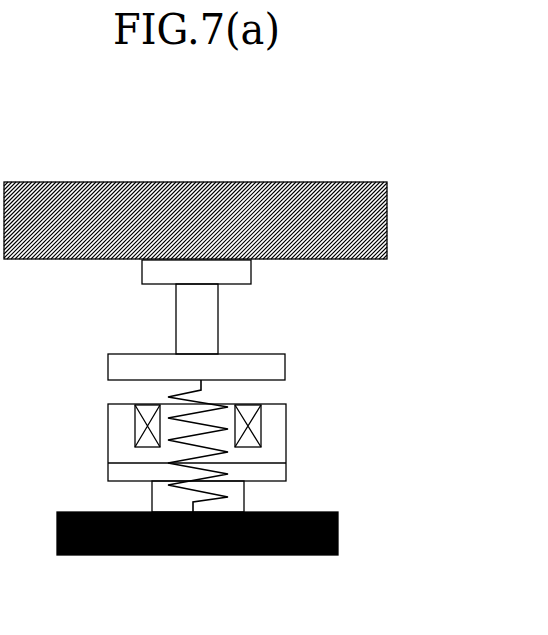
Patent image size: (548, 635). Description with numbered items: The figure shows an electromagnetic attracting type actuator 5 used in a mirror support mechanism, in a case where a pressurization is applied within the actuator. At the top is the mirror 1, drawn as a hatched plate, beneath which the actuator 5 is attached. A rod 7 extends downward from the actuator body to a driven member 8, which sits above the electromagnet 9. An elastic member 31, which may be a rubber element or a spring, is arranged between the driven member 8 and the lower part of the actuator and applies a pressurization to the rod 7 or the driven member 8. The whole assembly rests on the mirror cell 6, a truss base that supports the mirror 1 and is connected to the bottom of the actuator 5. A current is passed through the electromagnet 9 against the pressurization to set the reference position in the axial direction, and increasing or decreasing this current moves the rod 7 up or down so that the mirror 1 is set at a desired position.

The mirror 1 is at (290, 182).
The electromagnetic attracting type actuator 5 is at (251, 271).
The rod 7 is at (218, 318).
The driven member 8 is at (285, 365).
The electromagnet 9 is at (261, 418).
The elastic member 31 is at (227, 453).
The mirror cell 6 is at (340, 530).